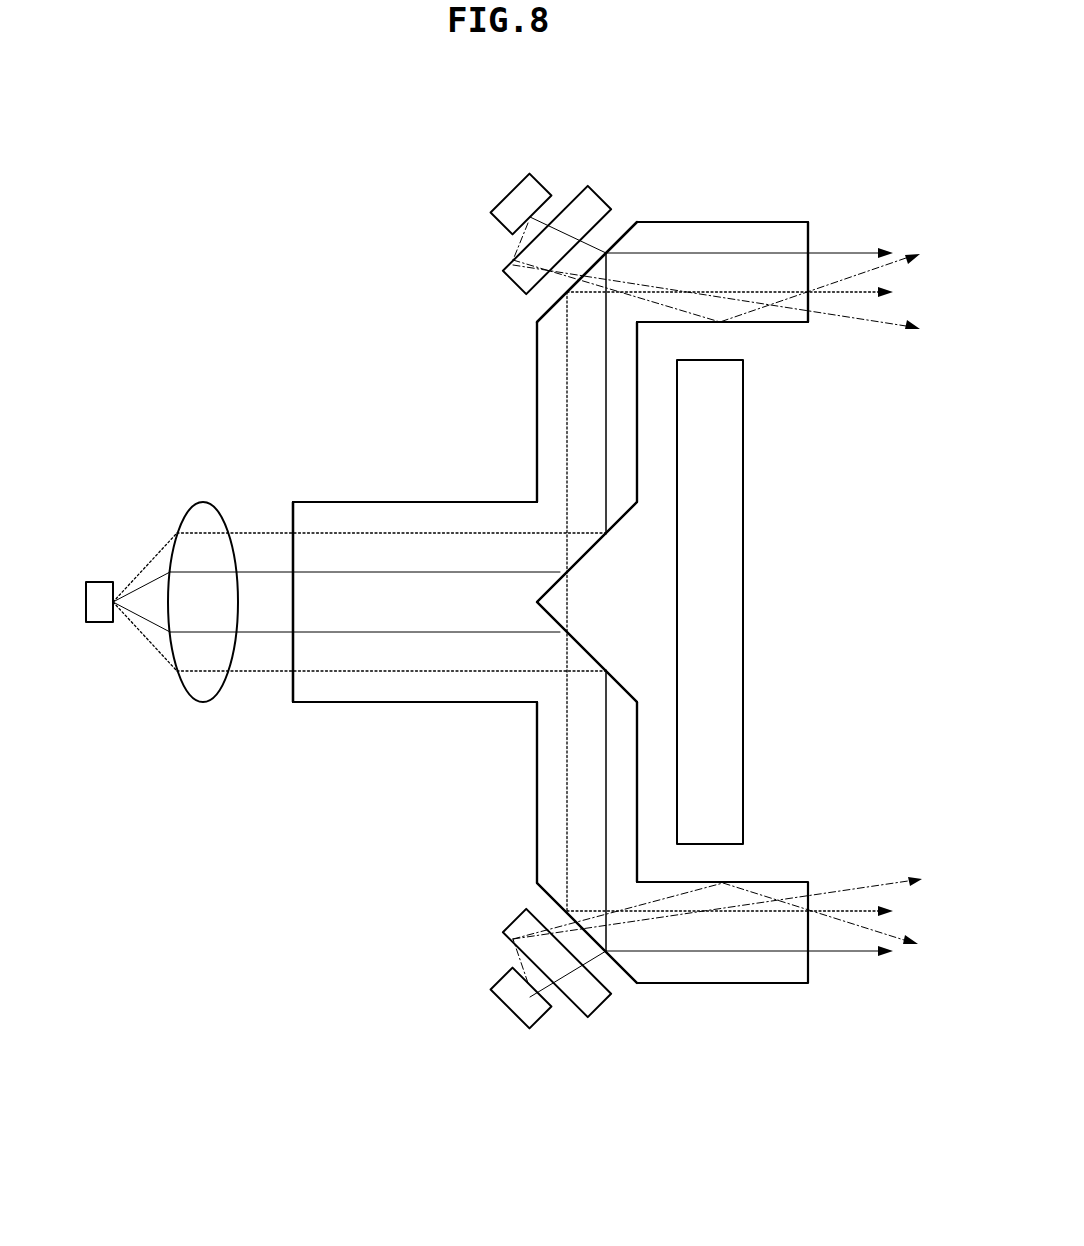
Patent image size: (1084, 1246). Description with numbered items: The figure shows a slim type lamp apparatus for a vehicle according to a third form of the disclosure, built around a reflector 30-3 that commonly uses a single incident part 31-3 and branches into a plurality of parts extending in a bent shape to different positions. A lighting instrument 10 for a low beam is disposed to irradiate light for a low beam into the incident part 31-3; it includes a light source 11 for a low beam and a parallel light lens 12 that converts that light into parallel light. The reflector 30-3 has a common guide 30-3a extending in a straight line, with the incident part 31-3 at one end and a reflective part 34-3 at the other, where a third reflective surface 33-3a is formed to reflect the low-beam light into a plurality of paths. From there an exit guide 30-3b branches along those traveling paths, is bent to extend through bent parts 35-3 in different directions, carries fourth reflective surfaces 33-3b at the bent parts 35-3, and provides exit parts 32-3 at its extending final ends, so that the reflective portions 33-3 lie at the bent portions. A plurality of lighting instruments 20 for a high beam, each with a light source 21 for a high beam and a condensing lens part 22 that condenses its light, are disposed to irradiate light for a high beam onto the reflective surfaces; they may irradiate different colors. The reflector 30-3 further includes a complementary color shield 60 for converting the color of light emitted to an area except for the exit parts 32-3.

The lighting instrument for a low beam 10 is at (156, 562).
The light source for a low beam 11 is at (100, 582).
The parallel light lens 12 is at (203, 502).
The lighting instrument for a high beam 20 is at (490, 218).
The light source for a high beam 21 is at (508, 207).
The condensing lens part 22 is at (512, 268).
The reflector 30-3 is at (362, 452).
The common guide 30-3a is at (420, 610).
The exit guide 30-3b is at (615, 417).
The incident part 31-3 is at (303, 652).
The exit part 32-3 is at (810, 233).
The reflective portion 33-3 is at (618, 237).
The fourth reflective surface 33-3b is at (631, 205).
The third reflective surface 33-3a is at (593, 545).
The reflective part 34-3 is at (578, 512).
The bent part 35-3 is at (617, 902).
The complementary color shield 60 is at (725, 765).